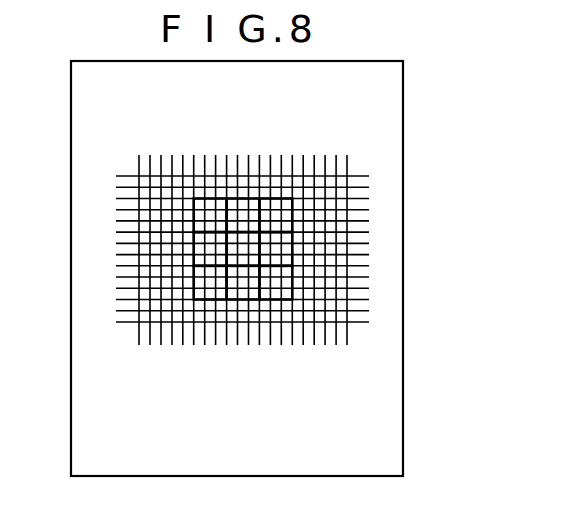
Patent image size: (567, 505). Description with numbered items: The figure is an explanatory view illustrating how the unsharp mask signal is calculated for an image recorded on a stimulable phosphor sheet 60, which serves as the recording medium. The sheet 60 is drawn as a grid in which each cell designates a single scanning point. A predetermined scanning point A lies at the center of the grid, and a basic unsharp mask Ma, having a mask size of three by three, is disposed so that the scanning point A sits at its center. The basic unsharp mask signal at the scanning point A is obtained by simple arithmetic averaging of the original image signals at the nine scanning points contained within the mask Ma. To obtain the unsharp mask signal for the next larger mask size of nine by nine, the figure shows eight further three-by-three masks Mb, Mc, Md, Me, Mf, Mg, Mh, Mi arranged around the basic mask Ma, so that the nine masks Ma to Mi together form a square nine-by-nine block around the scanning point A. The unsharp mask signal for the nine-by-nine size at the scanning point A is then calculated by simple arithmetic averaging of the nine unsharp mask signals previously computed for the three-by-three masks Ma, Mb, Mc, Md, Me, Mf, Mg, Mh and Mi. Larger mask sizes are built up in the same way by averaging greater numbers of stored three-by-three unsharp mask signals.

The stimulable phosphor sheet 60 is at (403, 128).
The basic unsharp mask Ma is at (286, 263).
The unsharp mask Mb is at (208, 200).
The unsharp mask Mc is at (243, 200).
The unsharp mask Md is at (272, 200).
The unsharp mask Me is at (192, 247).
The predetermined scanning point A is at (260, 260).
The unsharp mask Mf is at (238, 247).
The unsharp mask Mg is at (212, 299).
The unsharp mask Mh is at (247, 299).
The unsharp mask Mi is at (277, 299).